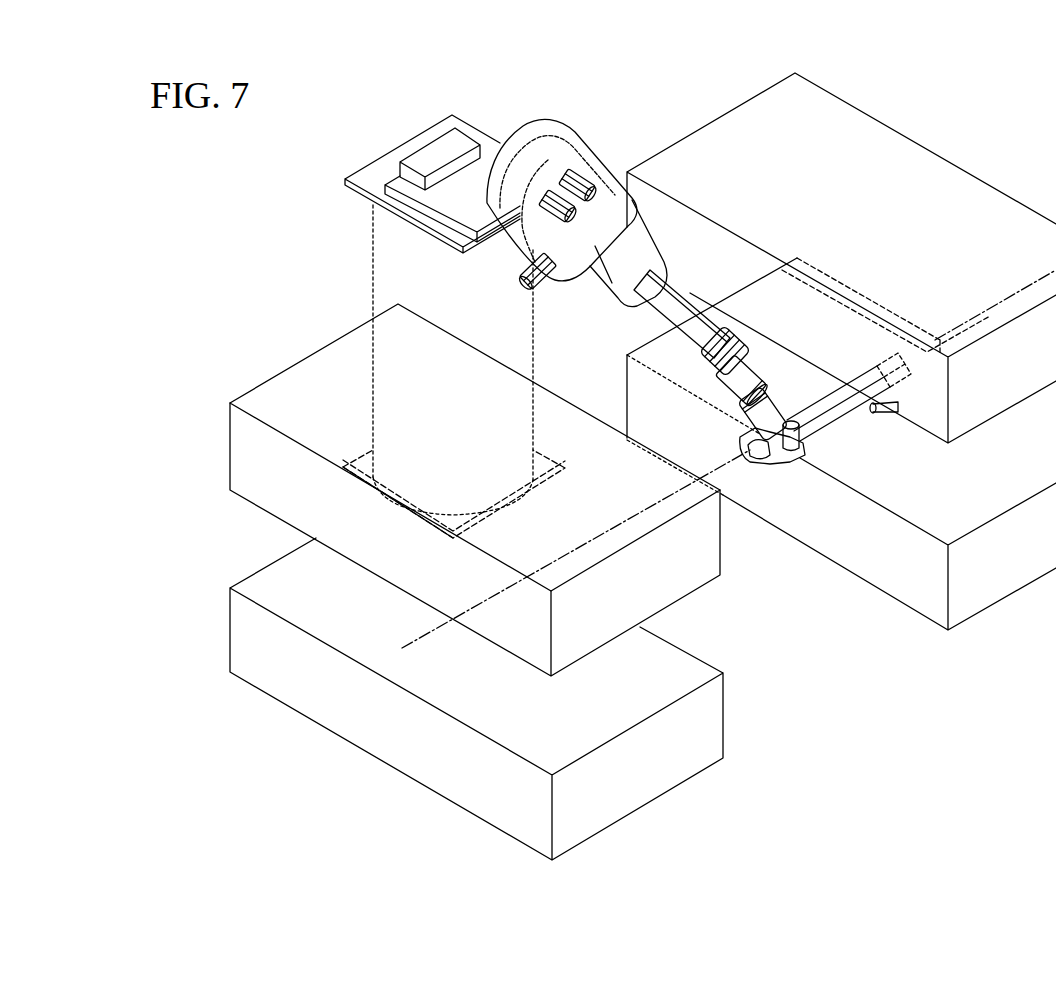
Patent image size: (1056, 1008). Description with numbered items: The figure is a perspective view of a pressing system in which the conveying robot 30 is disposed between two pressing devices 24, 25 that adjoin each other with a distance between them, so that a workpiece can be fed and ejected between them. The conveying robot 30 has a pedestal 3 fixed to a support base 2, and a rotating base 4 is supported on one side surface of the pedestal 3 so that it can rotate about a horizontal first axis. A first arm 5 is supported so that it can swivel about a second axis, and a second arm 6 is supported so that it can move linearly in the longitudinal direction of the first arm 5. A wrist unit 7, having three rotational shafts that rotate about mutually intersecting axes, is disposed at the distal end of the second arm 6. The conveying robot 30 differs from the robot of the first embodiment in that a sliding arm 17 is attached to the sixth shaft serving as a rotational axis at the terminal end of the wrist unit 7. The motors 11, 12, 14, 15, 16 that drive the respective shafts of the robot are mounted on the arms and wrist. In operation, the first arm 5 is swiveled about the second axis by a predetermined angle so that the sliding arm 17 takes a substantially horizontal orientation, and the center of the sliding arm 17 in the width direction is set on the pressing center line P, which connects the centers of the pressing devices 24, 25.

The support base 2 is at (353, 163).
The pedestal 3 is at (495, 128).
The rotating base 4 is at (548, 135).
The first arm 5 is at (600, 252).
The second arm 6 is at (677, 287).
The wrist unit 7 is at (786, 384).
The motor 11 is at (584, 165).
The motor 12 is at (543, 290).
The motor 14 is at (752, 372).
The motor 15 is at (745, 395).
The motor 16 is at (740, 338).
The sliding arm 17 is at (845, 424).
The pressing device 24 is at (278, 396).
The pressing device 25 is at (948, 182).
The conveying robot 30 is at (623, 285).
The pressing center line P is at (740, 468).